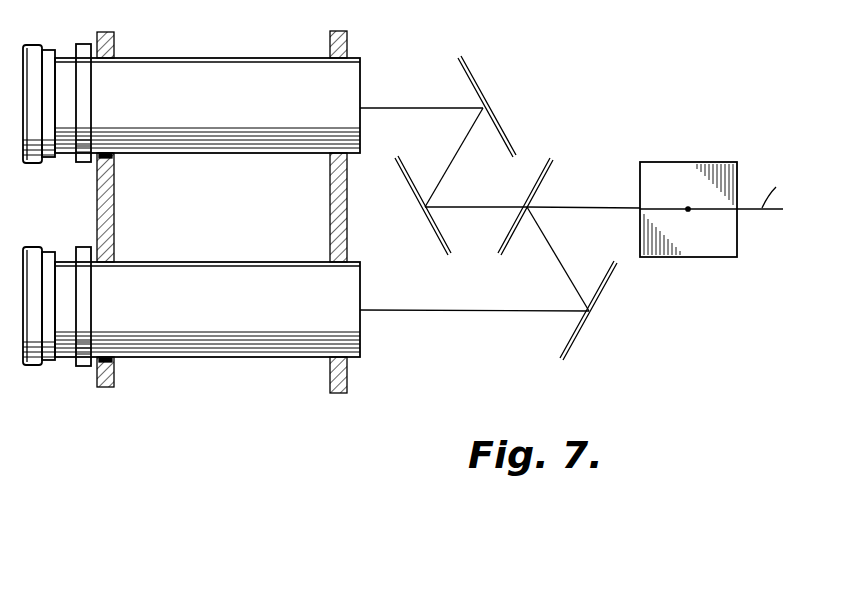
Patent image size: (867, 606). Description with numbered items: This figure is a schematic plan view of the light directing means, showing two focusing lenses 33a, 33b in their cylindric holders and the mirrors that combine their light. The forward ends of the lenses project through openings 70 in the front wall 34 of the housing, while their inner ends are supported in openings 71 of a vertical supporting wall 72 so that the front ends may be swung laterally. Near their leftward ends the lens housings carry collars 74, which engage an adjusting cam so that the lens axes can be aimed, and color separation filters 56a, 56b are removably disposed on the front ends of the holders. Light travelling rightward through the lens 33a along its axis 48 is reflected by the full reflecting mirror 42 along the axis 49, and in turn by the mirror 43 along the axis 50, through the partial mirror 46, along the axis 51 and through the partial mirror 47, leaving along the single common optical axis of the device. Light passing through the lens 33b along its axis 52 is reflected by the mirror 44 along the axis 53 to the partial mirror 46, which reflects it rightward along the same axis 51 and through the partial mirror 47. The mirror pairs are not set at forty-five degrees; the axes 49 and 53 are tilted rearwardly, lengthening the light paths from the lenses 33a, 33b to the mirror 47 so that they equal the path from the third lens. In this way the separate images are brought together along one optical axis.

The lens 33a is at (232, 78).
The lens 33b is at (245, 340).
The front wall 34 is at (108, 214).
The full reflecting mirror 42 is at (481, 90).
The full reflecting mirror 43 is at (428, 232).
The full reflecting mirror 44 is at (582, 333).
The partial mirror 46 is at (548, 176).
The partial mirror 47 is at (688, 168).
The axis 48 is at (402, 107).
The axis 49 is at (465, 136).
The axis 50 is at (500, 186).
The axis 51 is at (592, 210).
The axis 52 is at (488, 313).
The axis 53 is at (561, 270).
The filter 56a is at (32, 165).
The filter 56b is at (35, 367).
The opening 70 is at (118, 156).
The opening 71 is at (345, 48).
The vertical supporting wall 72 is at (346, 208).
The collar 74 is at (83, 50).